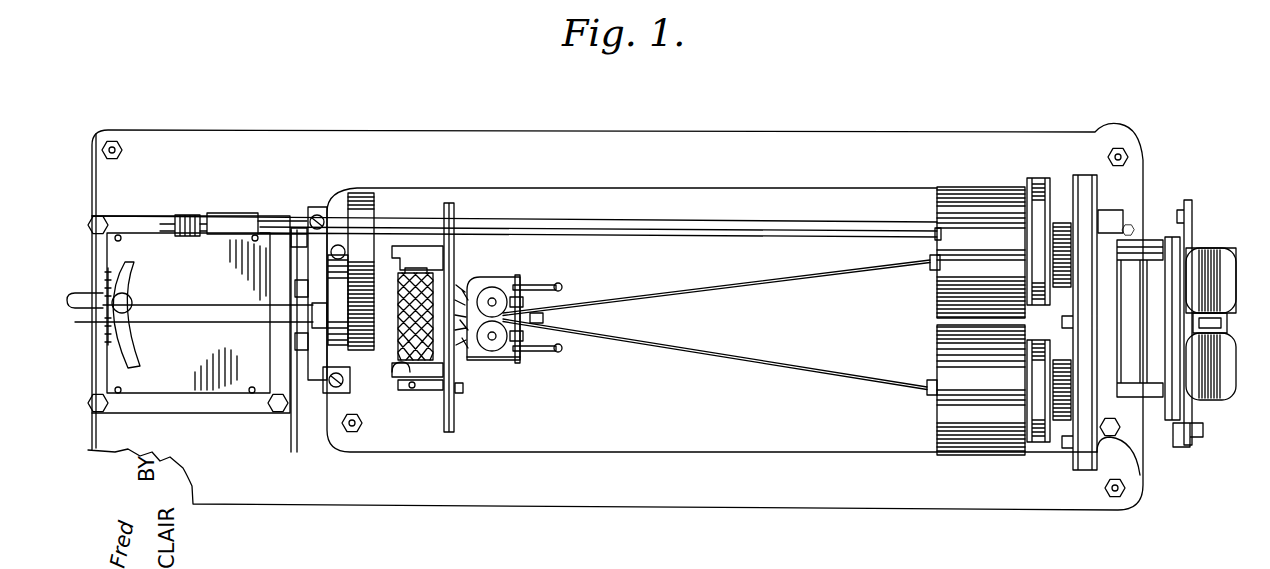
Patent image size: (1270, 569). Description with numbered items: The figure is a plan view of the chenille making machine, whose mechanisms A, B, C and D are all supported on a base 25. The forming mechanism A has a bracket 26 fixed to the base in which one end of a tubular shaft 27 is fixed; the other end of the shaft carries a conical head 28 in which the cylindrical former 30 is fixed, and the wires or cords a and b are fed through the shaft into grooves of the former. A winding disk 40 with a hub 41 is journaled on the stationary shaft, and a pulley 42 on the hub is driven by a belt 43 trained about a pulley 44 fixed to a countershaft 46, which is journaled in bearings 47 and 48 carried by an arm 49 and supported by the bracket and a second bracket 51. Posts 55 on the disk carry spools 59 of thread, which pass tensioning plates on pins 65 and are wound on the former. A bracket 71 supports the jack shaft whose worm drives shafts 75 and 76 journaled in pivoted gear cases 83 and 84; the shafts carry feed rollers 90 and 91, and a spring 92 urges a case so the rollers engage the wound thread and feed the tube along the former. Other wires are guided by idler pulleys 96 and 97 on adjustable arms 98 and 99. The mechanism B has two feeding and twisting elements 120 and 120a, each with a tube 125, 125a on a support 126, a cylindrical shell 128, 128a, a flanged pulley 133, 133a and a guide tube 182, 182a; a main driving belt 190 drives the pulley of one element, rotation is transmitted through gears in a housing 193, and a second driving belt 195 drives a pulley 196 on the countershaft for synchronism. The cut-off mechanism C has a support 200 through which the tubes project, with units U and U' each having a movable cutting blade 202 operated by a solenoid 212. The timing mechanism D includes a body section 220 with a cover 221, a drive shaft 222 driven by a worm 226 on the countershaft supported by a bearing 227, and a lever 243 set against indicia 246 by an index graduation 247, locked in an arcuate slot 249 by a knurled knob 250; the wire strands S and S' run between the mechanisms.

The base 25 is at (765, 528).
The bracket 26 is at (352, 433).
The tubular shaft 27 is at (294, 453).
The conical head 28 is at (470, 268).
The cylindrical support or former 30 is at (500, 288).
The disk 40 is at (450, 228).
The hub 41 is at (395, 392).
The pulley 42 is at (365, 352).
The belt 43 is at (363, 193).
The pulley 44 is at (377, 190).
The countershaft 46 is at (700, 222).
The bearing 47 is at (318, 207).
The bearing 48 is at (1110, 216).
The arm 49 is at (300, 224).
The second bracket 51 is at (1162, 420).
The post 55 is at (403, 262).
The spool 59 is at (420, 378).
The pin 65 is at (458, 392).
The bracket 71 is at (553, 300).
The shaft 75 is at (492, 337).
The shaft 76 is at (522, 286).
The gear case 83 is at (473, 360).
The gear case 84 is at (473, 276).
The feed roller 90 is at (500, 351).
The feed roller 91 is at (540, 290).
The spring 92 is at (525, 362).
The idler pulley 96 is at (545, 352).
The idler pulley 97 is at (560, 305).
The adjustable arm 98 is at (560, 352).
The adjustable arm 99 is at (575, 312).
The feeding and twisting element 120 is at (951, 460).
The feeding and twisting element 120a is at (945, 187).
The tube 125 is at (1147, 398).
The tube 125a is at (1152, 243).
The support 126 is at (1125, 400).
The cylindrical shell 128 is at (988, 445).
The cylindrical shell 128a is at (990, 205).
The flanged pulley 133 is at (1050, 443).
The flanged pulley 133a is at (1083, 174).
The guide tube 182 is at (927, 383).
The guide tube 182a is at (931, 262).
The main driving belt 190 is at (1037, 443).
The housing 193 is at (1098, 203).
The second driving belt 195 is at (1038, 177).
The pulley 196 is at (1055, 222).
The support 200 is at (1166, 240).
The movable cutting blade 202 is at (1185, 210).
The solenoid 212 is at (1200, 247).
The body section 220 is at (203, 413).
The cover 221 is at (257, 395).
The drive shaft 222 is at (185, 402).
The worm 226 is at (190, 213).
The bearing 227 is at (225, 216).
The lever 243 is at (76, 450).
The indicia 246 is at (115, 495).
The index graduation 247 is at (118, 397).
The arcuate slot 249 is at (131, 350).
The knurled knob 250 is at (130, 298).
The mechanism A is at (433, 212).
The mechanism B is at (976, 186).
The cut-off mechanism C is at (1216, 244).
The timing mechanism D is at (153, 247).
The lower wire strand S is at (615, 338).
The upper wire strand S' is at (716, 205).
The unit U is at (1204, 430).
The unit U' is at (1238, 247).
The wire or cord a is at (210, 325).
The wire or cord b is at (210, 305).